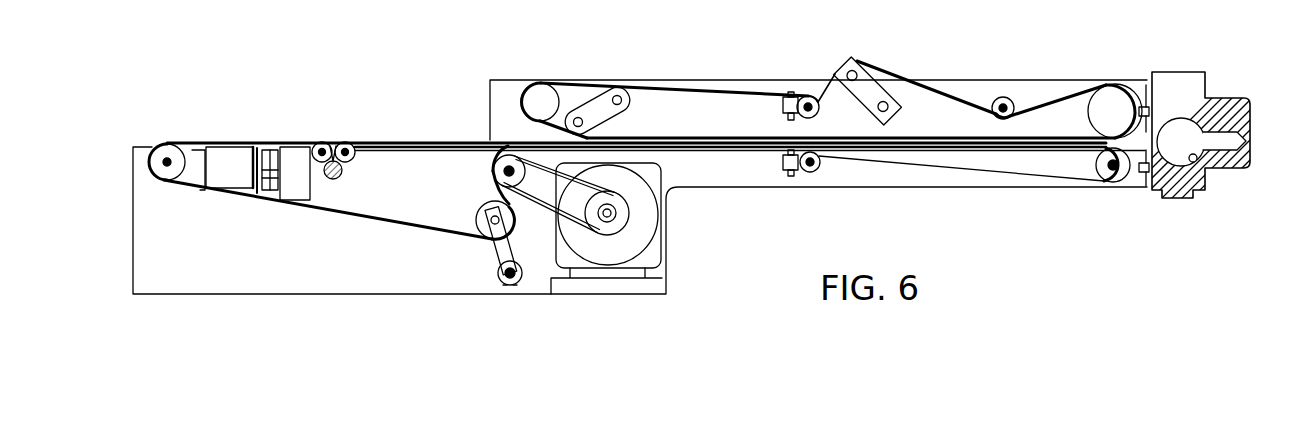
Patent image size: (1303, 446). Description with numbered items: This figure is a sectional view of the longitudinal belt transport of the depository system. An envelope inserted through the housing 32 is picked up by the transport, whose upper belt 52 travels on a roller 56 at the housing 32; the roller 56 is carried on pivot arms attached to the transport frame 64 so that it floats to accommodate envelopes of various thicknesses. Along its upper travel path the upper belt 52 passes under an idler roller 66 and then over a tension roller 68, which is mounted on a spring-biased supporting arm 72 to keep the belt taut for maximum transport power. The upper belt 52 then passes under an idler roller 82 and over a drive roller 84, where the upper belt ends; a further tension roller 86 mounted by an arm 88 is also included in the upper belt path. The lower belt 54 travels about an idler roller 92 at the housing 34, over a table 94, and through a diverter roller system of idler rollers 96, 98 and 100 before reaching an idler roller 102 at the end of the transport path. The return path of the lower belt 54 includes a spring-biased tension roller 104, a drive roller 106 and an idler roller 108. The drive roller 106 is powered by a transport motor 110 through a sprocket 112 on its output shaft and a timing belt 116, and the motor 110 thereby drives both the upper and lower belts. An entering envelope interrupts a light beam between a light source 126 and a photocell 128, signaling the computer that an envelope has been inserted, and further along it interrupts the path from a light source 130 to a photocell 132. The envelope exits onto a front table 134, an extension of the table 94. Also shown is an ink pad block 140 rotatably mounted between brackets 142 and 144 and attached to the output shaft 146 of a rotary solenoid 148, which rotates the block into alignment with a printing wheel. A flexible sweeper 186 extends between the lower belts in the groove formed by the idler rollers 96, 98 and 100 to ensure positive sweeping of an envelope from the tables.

The housing 32 is at (1225, 98).
The housing 34 is at (1197, 161).
The upper belt 52 is at (940, 93).
The lower belt 54 is at (985, 184).
The roller 56 is at (1111, 96).
The transport frame 64 is at (745, 182).
The idler roller 66 is at (1005, 97).
The tension roller 68 is at (857, 68).
The supporting arm 72 is at (897, 110).
The idler roller 82 is at (818, 112).
The drive roller 84 is at (539, 96).
The tension roller 86 is at (571, 117).
The arm 88 is at (617, 93).
The idler roller 92 is at (1112, 183).
The table 94 is at (1050, 154).
The idler roller 96 is at (356, 157).
The idler roller 98 is at (342, 175).
The idler roller 100 is at (323, 178).
The idler roller 102 is at (158, 170).
The tension roller 104 is at (478, 222).
The drive roller 106 is at (494, 171).
The idler roller 108 is at (819, 174).
The transport motor 110 is at (650, 245).
The sprocket 112 is at (611, 207).
The timing belt 116 is at (545, 200).
The light source 126 is at (1143, 180).
The photocell 128 is at (1143, 105).
The light source 130 is at (795, 178).
The photocell 132 is at (793, 92).
The front table 134 is at (420, 152).
The ink pad block 140 is at (232, 165).
The bracket 142 is at (244, 192).
The bracket 144 is at (203, 192).
The output shaft 146 is at (271, 190).
The rotary solenoid 148 is at (298, 200).
The sweeper 186 is at (334, 144).